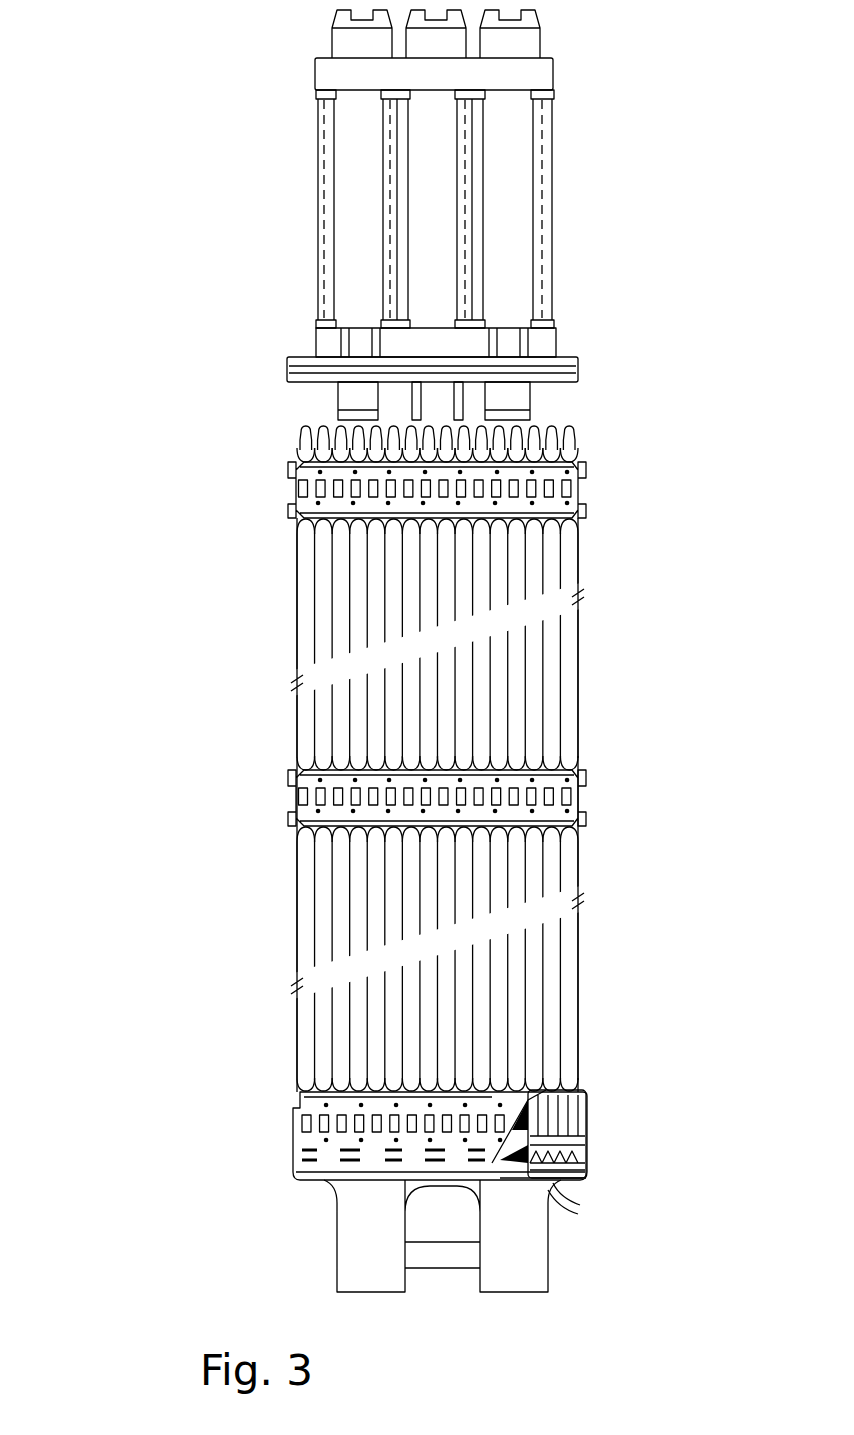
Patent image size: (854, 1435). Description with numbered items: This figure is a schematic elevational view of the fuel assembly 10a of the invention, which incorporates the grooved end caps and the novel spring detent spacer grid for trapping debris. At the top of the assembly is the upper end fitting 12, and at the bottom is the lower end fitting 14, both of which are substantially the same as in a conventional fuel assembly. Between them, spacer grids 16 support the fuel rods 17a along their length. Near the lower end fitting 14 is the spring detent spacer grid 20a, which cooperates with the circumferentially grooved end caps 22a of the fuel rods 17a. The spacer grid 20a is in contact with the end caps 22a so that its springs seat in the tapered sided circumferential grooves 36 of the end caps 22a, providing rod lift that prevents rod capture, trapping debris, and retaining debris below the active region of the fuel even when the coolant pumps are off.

The fuel assembly 10a is at (281, 88).
The upper end fitting 12 is at (565, 355).
The spacer grids 16 is at (588, 490).
The fuel rods 17a is at (578, 995).
The tapered sided circumferential grooves 36 is at (578, 1082).
The spring detent spacer grid 20a is at (598, 1130).
The lower end fitting 14 is at (588, 1165).
The grooved end caps 22a is at (553, 1183).